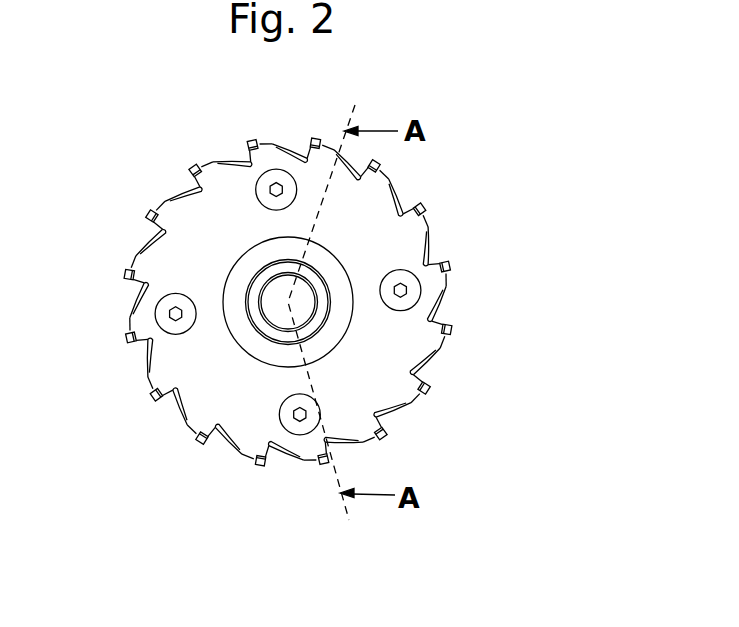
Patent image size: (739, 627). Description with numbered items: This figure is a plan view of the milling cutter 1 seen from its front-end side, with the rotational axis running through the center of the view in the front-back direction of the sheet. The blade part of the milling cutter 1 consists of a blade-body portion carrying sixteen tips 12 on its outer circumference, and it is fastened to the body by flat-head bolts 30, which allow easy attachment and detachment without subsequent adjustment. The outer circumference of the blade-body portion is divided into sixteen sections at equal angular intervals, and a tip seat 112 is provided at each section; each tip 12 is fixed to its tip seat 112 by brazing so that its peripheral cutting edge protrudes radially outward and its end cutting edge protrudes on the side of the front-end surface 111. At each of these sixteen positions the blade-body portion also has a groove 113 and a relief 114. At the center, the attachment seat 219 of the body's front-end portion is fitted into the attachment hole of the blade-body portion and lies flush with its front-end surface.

The milling cutter 1 is at (120, 231).
The tip 12 is at (420, 211).
The flat-head bolt 30 is at (155, 314).
The front-end surface 111 is at (255, 407).
The tip seat 112 is at (378, 173).
The groove 113 is at (135, 345).
The relief 114 is at (443, 300).
The attachment seat 219 is at (242, 277).